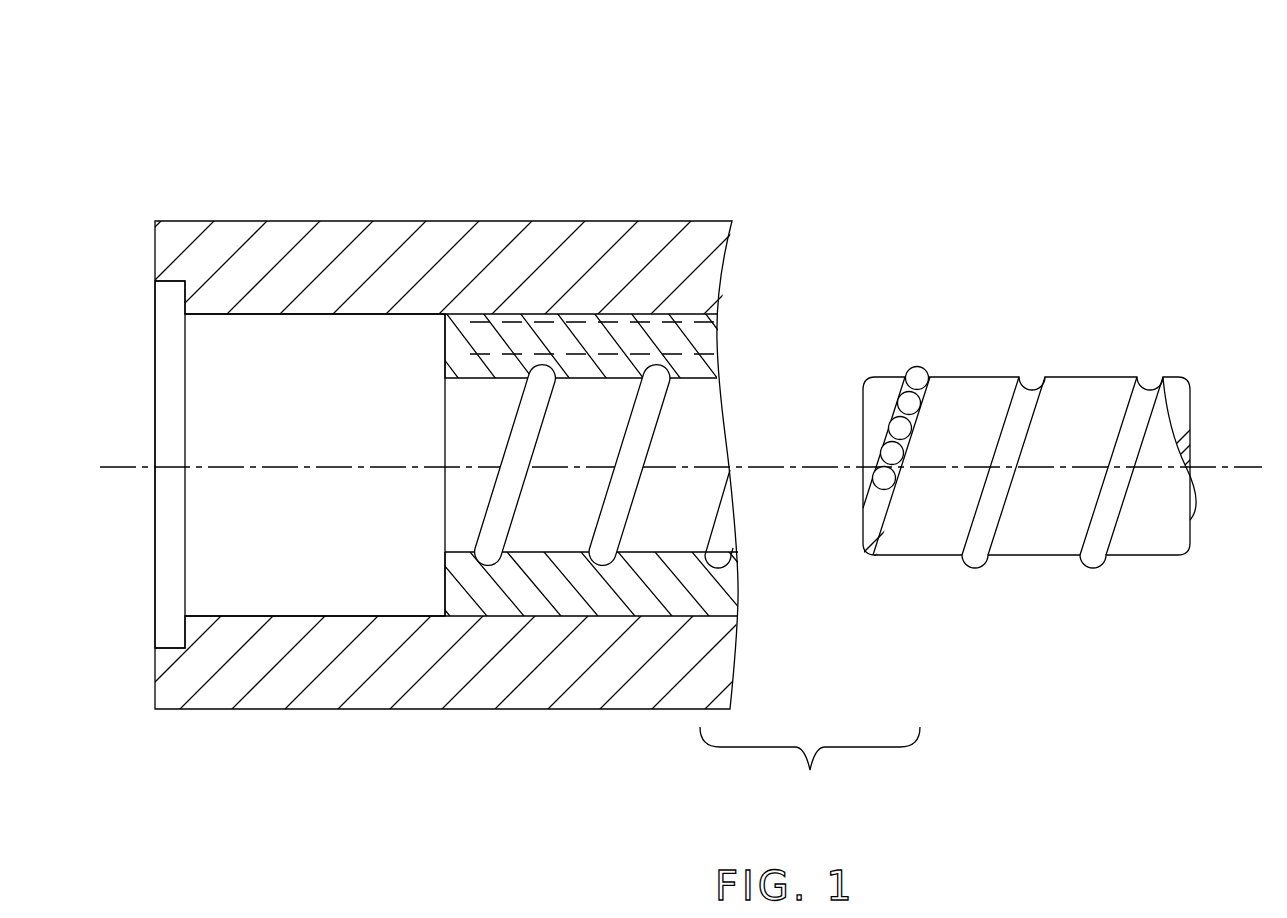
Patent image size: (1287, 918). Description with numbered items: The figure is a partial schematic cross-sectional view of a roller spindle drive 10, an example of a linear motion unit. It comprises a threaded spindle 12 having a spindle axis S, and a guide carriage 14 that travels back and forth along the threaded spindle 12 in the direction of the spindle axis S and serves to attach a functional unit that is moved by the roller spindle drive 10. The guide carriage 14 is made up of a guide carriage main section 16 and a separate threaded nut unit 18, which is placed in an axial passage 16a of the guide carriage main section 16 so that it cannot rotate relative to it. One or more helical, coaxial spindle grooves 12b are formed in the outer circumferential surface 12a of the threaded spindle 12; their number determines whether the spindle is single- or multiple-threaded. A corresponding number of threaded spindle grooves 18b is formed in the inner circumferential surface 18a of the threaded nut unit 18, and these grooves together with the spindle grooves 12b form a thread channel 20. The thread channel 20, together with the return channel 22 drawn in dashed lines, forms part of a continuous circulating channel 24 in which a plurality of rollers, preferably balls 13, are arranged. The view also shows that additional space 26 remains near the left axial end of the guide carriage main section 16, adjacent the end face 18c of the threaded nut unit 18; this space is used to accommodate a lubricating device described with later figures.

The roller spindle drive 10 is at (950, 132).
The threaded spindle 12 is at (1118, 378).
The outer circumferential surface 12a is at (1103, 400).
The spindle grooves 12b is at (1030, 380).
The balls 13 is at (912, 367).
The guide carriage 14 is at (657, 145).
The guide carriage main section 16 is at (690, 240).
The axial passage 16a is at (258, 315).
The threaded nut unit 18 is at (580, 615).
The inner circumferential surface 18a is at (662, 548).
The threaded spindle grooves 18b is at (647, 420).
The end face 18c is at (445, 583).
The thread channel 20 is at (523, 440).
The return channel 22 is at (507, 333).
The continuous circulating channel 24 is at (567, 333).
The additional space 26 is at (270, 416).
The spindle axis S is at (1248, 478).